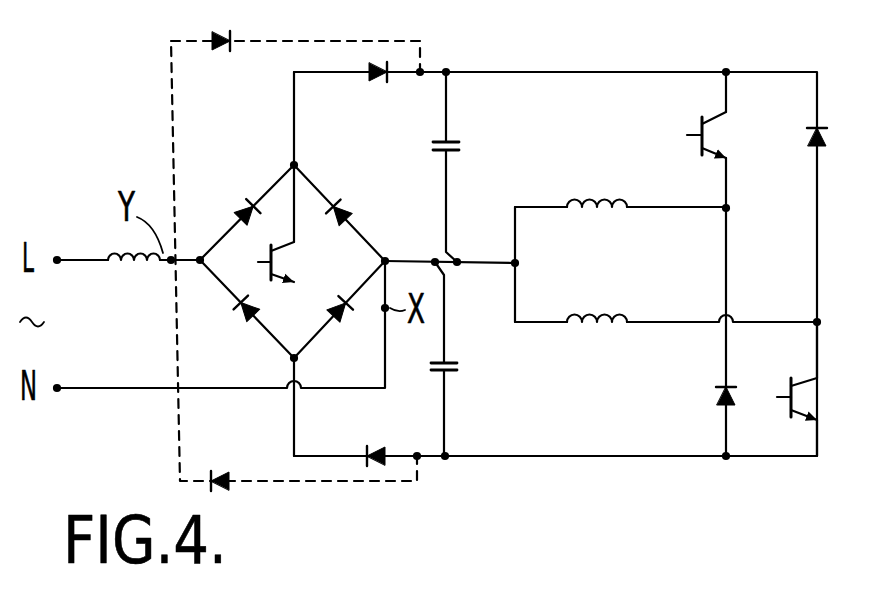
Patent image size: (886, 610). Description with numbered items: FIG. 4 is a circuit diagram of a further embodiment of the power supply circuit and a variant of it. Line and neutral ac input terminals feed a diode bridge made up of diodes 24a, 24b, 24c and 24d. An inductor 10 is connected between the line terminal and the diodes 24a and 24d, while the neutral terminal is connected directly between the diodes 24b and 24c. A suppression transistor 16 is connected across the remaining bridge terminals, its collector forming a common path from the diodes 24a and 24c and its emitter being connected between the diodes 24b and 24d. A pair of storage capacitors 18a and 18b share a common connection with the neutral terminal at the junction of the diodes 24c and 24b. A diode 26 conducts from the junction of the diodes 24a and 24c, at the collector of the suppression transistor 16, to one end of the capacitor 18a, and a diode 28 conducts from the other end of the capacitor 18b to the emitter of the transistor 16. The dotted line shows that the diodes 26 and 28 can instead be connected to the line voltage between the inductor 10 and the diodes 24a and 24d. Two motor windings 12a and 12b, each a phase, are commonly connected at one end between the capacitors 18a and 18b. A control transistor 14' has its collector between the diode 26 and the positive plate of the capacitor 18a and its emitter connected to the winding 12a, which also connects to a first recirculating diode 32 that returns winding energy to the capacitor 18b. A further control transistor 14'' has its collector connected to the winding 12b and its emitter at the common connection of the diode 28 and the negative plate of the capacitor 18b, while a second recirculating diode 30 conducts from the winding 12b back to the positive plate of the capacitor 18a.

The inductor 10 is at (117, 247).
The first winding 12a is at (586, 200).
The second winding 12b is at (589, 313).
The control transistor 14' is at (734, 115).
The further control transistor 14'' is at (778, 389).
The suppression transistor 16 is at (283, 262).
The storage capacitor 18a is at (452, 138).
The storage capacitor 18b is at (452, 357).
The diode 24a is at (243, 207).
The diode 24b is at (344, 318).
The diode 24c is at (345, 205).
The diode 24d is at (244, 318).
The diode 26 is at (380, 83).
The diode 28 is at (376, 447).
The second recirculating diode 30 is at (807, 142).
The first recirculating diode 32 is at (710, 392).